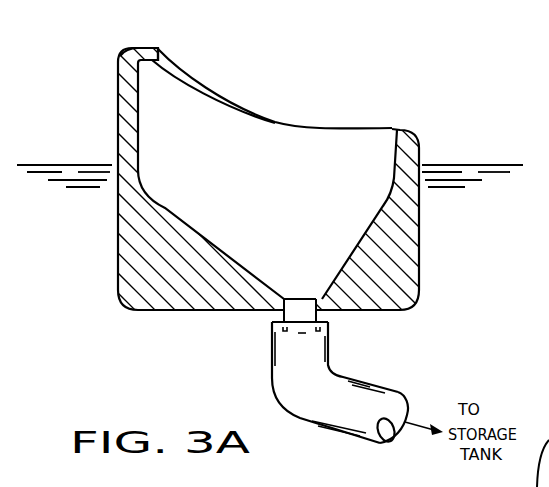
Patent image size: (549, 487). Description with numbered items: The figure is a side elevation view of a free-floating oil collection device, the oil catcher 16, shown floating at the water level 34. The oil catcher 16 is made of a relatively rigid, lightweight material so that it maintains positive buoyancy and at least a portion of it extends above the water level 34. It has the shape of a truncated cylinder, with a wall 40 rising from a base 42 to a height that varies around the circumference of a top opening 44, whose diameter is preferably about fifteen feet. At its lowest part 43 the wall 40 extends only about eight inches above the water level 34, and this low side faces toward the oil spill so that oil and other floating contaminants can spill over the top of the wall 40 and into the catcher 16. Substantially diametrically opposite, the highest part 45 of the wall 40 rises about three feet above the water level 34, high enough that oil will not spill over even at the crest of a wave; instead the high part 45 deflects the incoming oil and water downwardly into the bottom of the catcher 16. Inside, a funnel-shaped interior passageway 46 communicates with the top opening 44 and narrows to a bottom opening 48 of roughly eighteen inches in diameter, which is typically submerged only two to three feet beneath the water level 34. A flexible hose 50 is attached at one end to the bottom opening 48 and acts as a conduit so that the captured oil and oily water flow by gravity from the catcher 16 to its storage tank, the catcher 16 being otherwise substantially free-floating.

The oil catcher 16 is at (106, 56).
The water level 34 is at (70, 165).
The wall 40 is at (118, 263).
The base 42 is at (186, 310).
The lowest part of wall 43 is at (409, 128).
The top opening 44 is at (329, 128).
The highest part of wall 45 is at (143, 48).
The funnel-shaped interior passageway 46 is at (275, 205).
The bottom opening 48 is at (299, 299).
The flexible hose 50 is at (312, 352).